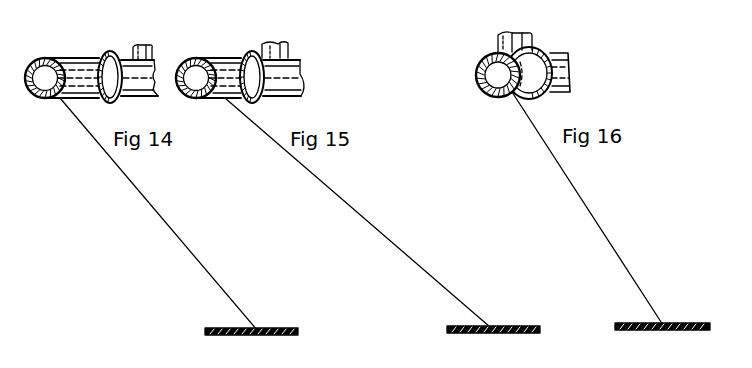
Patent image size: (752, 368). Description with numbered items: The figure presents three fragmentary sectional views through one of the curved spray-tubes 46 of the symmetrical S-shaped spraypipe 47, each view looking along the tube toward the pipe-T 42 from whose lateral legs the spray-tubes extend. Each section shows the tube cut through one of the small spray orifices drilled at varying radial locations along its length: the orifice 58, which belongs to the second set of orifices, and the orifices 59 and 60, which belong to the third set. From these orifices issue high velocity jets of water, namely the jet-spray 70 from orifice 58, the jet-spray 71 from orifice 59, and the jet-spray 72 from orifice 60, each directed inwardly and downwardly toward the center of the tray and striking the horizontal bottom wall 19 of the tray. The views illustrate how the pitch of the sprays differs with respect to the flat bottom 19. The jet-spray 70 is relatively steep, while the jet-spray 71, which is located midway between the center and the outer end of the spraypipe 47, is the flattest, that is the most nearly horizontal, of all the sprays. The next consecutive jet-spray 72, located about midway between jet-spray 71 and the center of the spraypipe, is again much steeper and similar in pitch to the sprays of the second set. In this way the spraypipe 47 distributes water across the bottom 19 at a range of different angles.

In FIG. 14, the bottom wall 19 is at (257, 328).
In FIG. 15, the bottom wall 19 is at (508, 326).
In FIG. 16, the bottom wall 19 is at (675, 323).
In FIG. 14, the pipe-T 42 is at (140, 45).
In FIG. 15, the pipe-T 42 is at (290, 52).
In FIG. 16, the pipe-T 42 is at (545, 48).
In FIG. 14, the spray-tube 46 is at (67, 58).
In FIG. 15, the spray-tube 46 is at (218, 58).
In FIG. 16, the spray-tube 46 is at (482, 63).
In FIG. 16, the S-shaped spraypipe 47 is at (571, 63).
In FIG. 14, the spray orifice 58 is at (58, 99).
In FIG. 15, the spray orifice 59 is at (217, 99).
In FIG. 16, the spray orifice 60 is at (511, 94).
In FIG. 14, the jet-spray 70 is at (181, 238).
In FIG. 15, the jet-spray 71 is at (374, 230).
In FIG. 16, the jet-spray 72 is at (602, 227).